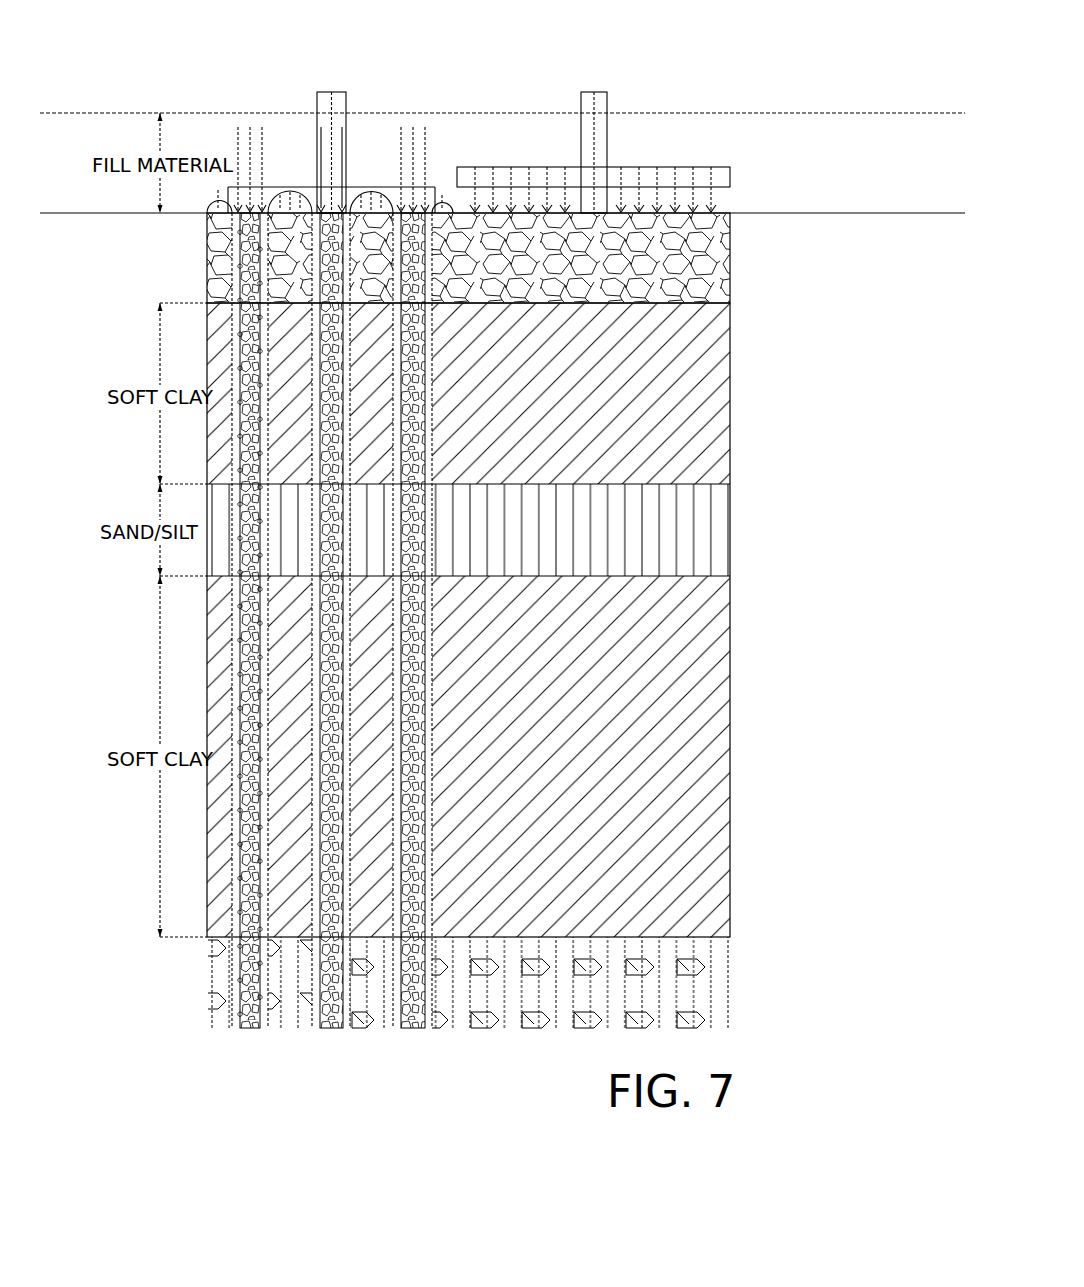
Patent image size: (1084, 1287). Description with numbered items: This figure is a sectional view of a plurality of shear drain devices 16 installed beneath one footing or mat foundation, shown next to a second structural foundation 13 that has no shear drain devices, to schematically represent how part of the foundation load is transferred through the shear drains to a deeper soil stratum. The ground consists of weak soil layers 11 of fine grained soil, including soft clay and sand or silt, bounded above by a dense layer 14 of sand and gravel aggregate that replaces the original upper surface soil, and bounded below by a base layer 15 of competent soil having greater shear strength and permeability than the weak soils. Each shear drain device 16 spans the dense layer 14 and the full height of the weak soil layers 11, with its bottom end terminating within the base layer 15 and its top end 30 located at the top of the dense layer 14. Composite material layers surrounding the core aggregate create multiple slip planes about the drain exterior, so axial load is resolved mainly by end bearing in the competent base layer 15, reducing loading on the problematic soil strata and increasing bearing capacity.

The weak soil layers 11 is at (735, 937).
The structural foundations 13 is at (333, 90).
The dense layer 14 is at (632, 270).
The base layer 15 is at (632, 992).
The shear drain devices 16 is at (246, 388).
The top end 30 is at (263, 221).